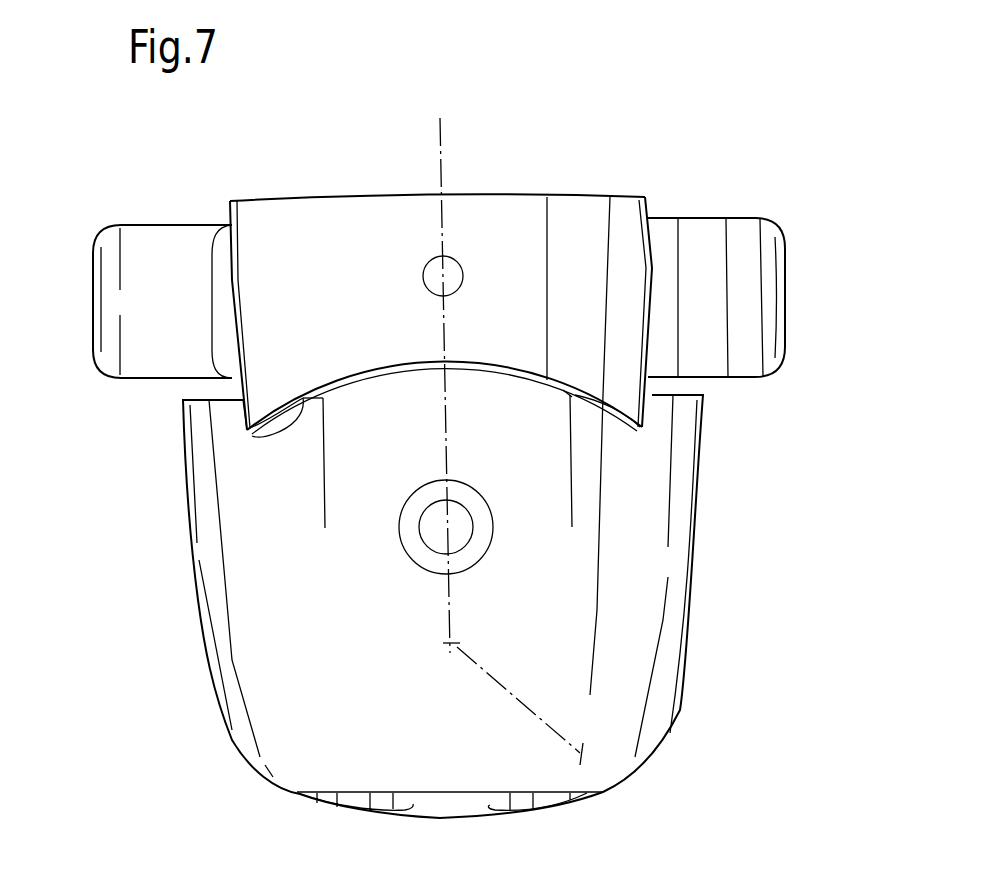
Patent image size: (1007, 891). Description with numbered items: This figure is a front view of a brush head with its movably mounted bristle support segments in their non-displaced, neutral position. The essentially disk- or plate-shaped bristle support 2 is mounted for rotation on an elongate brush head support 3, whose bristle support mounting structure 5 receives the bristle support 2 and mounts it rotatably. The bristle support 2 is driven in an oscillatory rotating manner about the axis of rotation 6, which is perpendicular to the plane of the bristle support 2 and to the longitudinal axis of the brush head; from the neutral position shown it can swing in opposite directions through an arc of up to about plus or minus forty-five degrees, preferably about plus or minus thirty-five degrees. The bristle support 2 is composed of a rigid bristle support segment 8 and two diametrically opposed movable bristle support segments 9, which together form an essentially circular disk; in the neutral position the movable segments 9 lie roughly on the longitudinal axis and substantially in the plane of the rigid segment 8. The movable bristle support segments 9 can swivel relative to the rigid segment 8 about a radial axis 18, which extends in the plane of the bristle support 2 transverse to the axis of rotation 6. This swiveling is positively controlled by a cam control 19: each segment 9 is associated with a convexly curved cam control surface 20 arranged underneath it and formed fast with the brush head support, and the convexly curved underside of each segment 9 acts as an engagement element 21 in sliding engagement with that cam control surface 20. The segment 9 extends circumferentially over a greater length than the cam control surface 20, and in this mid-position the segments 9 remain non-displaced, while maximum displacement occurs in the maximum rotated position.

The bristle support 2 is at (795, 227).
The brush head support 3 is at (152, 580).
The bristle support mounting structure 5 is at (668, 577).
The axis of rotation 6 is at (598, 766).
The rigid bristle support segment 8 is at (772, 300).
The movable bristle support segment 9 is at (615, 210).
The radial axis 18 is at (448, 272).
The cam control 19 is at (287, 437).
The cam control surface 20 is at (573, 397).
The engagement element 21 is at (300, 405).